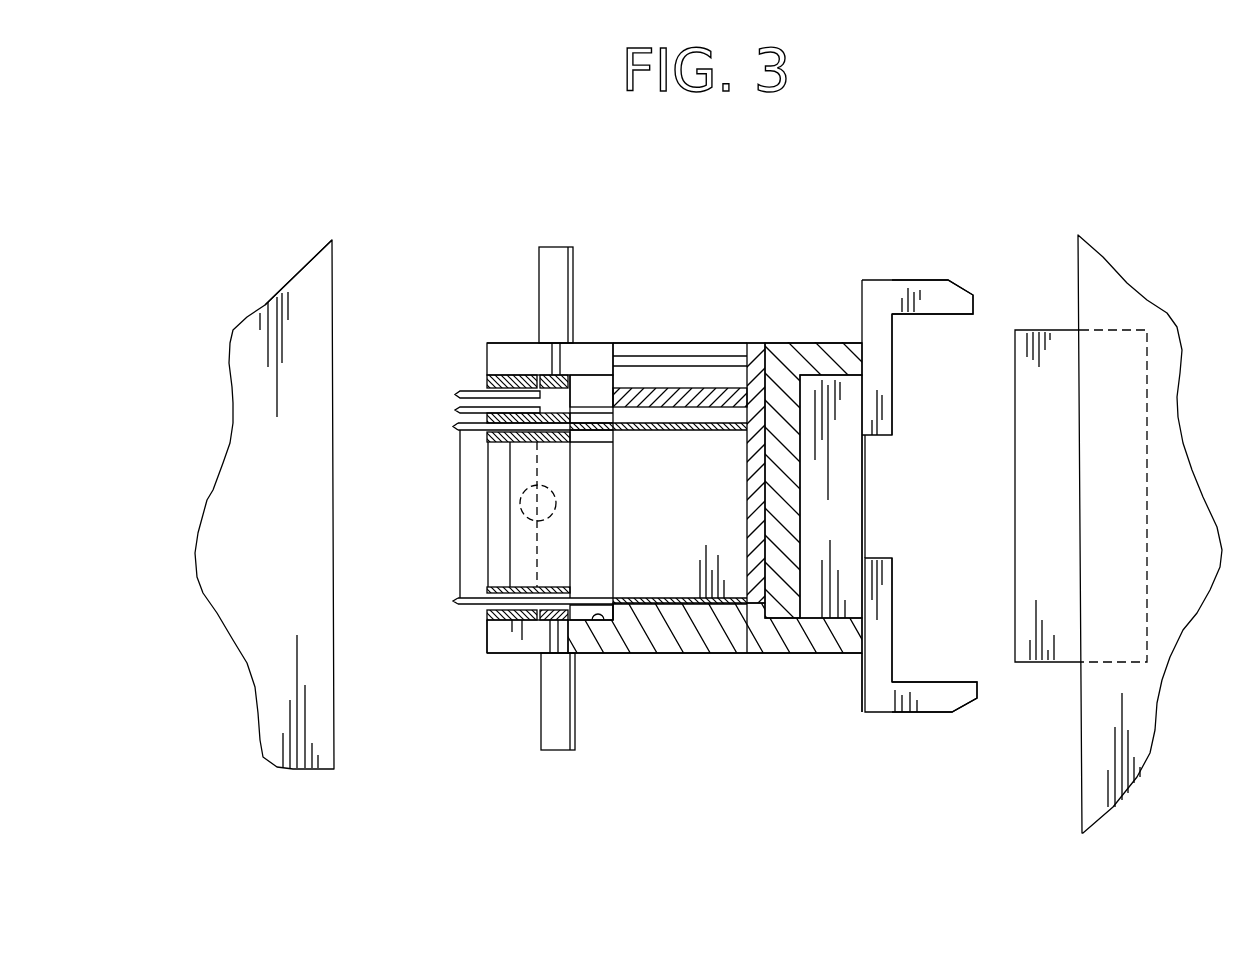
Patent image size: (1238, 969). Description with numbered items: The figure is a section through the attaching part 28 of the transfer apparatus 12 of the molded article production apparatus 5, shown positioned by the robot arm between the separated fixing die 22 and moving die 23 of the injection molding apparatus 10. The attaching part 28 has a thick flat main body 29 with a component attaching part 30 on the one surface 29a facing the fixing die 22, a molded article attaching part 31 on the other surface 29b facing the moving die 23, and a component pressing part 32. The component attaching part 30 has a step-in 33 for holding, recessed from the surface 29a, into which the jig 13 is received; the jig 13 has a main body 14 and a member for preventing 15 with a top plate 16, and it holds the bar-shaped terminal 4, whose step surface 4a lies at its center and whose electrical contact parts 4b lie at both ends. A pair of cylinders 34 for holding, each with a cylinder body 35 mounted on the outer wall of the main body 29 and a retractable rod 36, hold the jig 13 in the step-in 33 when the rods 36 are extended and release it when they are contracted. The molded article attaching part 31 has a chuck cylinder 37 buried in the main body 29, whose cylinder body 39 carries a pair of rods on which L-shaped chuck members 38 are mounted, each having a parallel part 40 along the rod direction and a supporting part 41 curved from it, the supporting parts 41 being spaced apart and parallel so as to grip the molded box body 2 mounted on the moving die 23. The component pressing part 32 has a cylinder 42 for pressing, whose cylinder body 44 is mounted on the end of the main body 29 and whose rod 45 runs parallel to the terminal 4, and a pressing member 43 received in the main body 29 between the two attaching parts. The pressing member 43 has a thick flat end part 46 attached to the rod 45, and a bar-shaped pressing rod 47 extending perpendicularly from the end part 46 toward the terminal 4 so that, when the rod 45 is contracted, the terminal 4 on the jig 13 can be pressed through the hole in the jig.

The box body 2 is at (1045, 329).
The terminal 4 is at (462, 408).
The step surface 4a is at (540, 443).
The electrical contact part 4b is at (498, 443).
The molded article production apparatus 5 is at (757, 232).
The injection molding apparatus 10 is at (262, 302).
The transfer apparatus 12 is at (645, 282).
The jig 13 is at (540, 660).
The main body 14 is at (575, 700).
The member for preventing 15 is at (512, 632).
The top plate 16 is at (522, 640).
The fixing die 22 is at (308, 265).
The moving die 23 is at (1150, 300).
The attaching part 28 is at (806, 343).
The main body 29 is at (711, 645).
The one surface 29a is at (487, 640).
The another surface 29b is at (867, 642).
The component attaching part 30 is at (485, 620).
The molded article attaching part 31 is at (866, 522).
The component pressing part 32 is at (597, 338).
The step-in for holding 33 is at (605, 645).
The cylinder for holding 34 is at (539, 285).
The cylinder body 35 is at (545, 262).
The rod 36 is at (560, 370).
The chuck cylinder 37 is at (866, 480).
The chuck member 38 is at (892, 409).
The cylinder body 39 is at (828, 605).
The parallel part 40 is at (878, 360).
The supporting part 41 is at (913, 290).
The cylinder for pressing 42 is at (535, 350).
The pressing member 43 is at (752, 343).
The cylinder body 44 is at (487, 360).
The rod 45 is at (668, 360).
The end part 46 is at (747, 640).
The pressing rod 47 is at (660, 400).